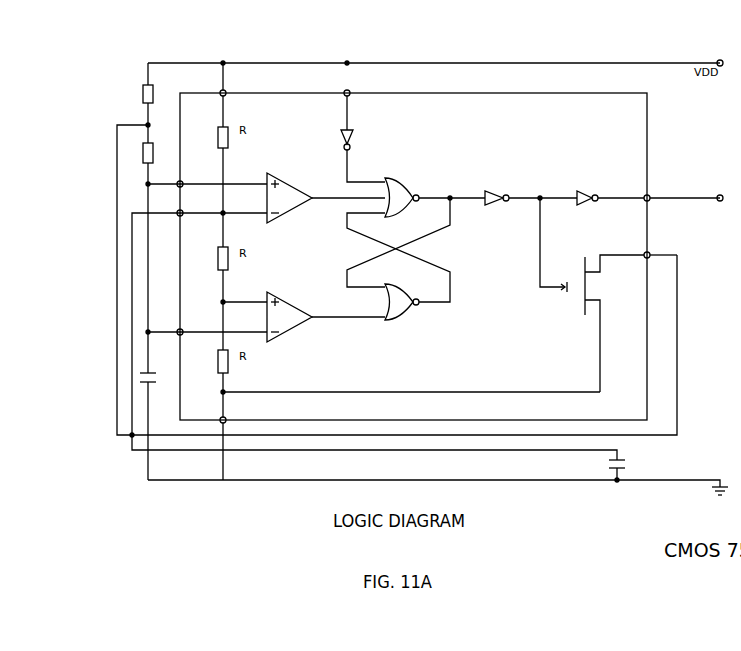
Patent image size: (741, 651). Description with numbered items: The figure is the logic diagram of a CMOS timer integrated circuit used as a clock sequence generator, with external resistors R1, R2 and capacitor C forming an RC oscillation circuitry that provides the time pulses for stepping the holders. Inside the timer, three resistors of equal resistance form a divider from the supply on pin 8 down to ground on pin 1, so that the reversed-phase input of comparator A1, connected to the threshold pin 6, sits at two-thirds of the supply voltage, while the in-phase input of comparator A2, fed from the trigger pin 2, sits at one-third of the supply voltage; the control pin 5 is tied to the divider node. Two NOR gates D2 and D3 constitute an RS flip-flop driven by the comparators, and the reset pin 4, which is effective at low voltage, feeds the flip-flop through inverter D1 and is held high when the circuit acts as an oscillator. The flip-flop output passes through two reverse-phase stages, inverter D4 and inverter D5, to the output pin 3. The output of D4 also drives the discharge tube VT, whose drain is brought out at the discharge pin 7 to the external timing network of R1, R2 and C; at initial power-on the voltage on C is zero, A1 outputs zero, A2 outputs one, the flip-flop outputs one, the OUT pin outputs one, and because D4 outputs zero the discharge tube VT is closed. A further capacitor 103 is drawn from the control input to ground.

The capacitor 103 is at (632, 460).
The VSS pin 1 is at (210, 421).
The TRIG pin 2 is at (207, 326).
The OUT pin 3 is at (669, 199).
The reset pin 4 is at (371, 94).
The CTRL pin 5 is at (184, 207).
The THR pin 6 is at (207, 178).
The DIS pin 7 is at (646, 250).
The VDD pin 8 is at (249, 94).
The external resistor R1 is at (160, 92).
The external resistor R2 is at (160, 152).
The external capacitor C is at (155, 374).
The comparator A1 is at (289, 197).
The comparator A2 is at (267, 316).
The inverter D1 is at (363, 139).
The NOR gate D2 is at (411, 194).
The NOR gate D3 is at (411, 309).
The inverter D4 is at (498, 188).
The inverter D5 is at (590, 188).
The discharge tube VT is at (592, 295).